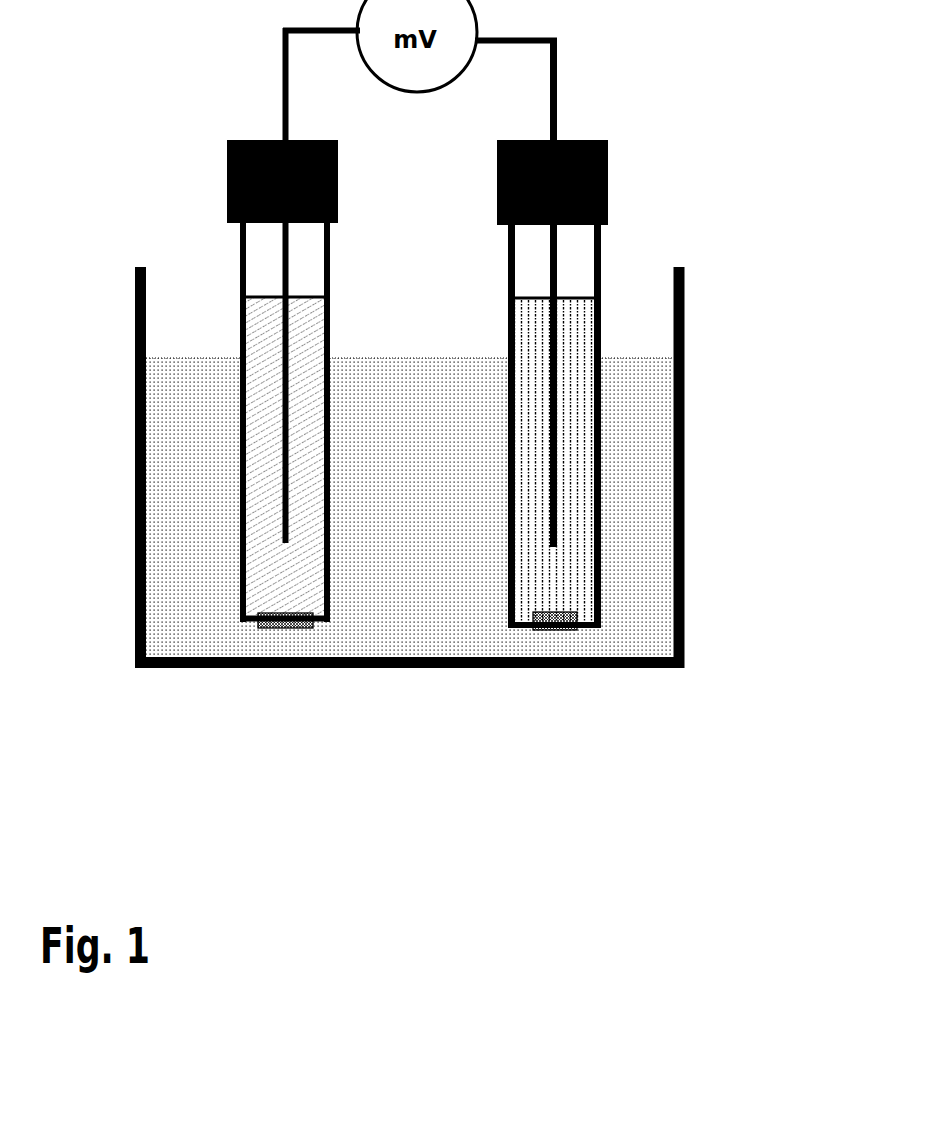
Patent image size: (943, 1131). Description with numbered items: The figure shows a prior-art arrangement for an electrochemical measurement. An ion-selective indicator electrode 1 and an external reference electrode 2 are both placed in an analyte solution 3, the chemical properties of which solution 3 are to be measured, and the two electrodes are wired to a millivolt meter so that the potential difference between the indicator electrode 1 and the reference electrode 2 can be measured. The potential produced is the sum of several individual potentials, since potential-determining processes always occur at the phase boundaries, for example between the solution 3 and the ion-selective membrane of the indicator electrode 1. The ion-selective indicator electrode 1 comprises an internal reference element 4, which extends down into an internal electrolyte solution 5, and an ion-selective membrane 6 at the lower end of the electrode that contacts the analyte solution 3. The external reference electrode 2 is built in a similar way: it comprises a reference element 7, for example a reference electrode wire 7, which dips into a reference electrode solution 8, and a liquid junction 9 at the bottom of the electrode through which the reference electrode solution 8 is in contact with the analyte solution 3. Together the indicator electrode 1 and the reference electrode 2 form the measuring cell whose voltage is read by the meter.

The ion-selective indicator electrode 1 is at (656, 413).
The external reference electrode 2 is at (285, 413).
The analyte solution 3 is at (633, 562).
The internal reference element 4 is at (557, 267).
The internal electrolyte solution 5 is at (575, 435).
The ion-selective membrane 6 is at (577, 630).
The reference element 7 is at (287, 383).
The reference electrode solution 8 is at (330, 603).
The liquid junction 9 is at (290, 630).